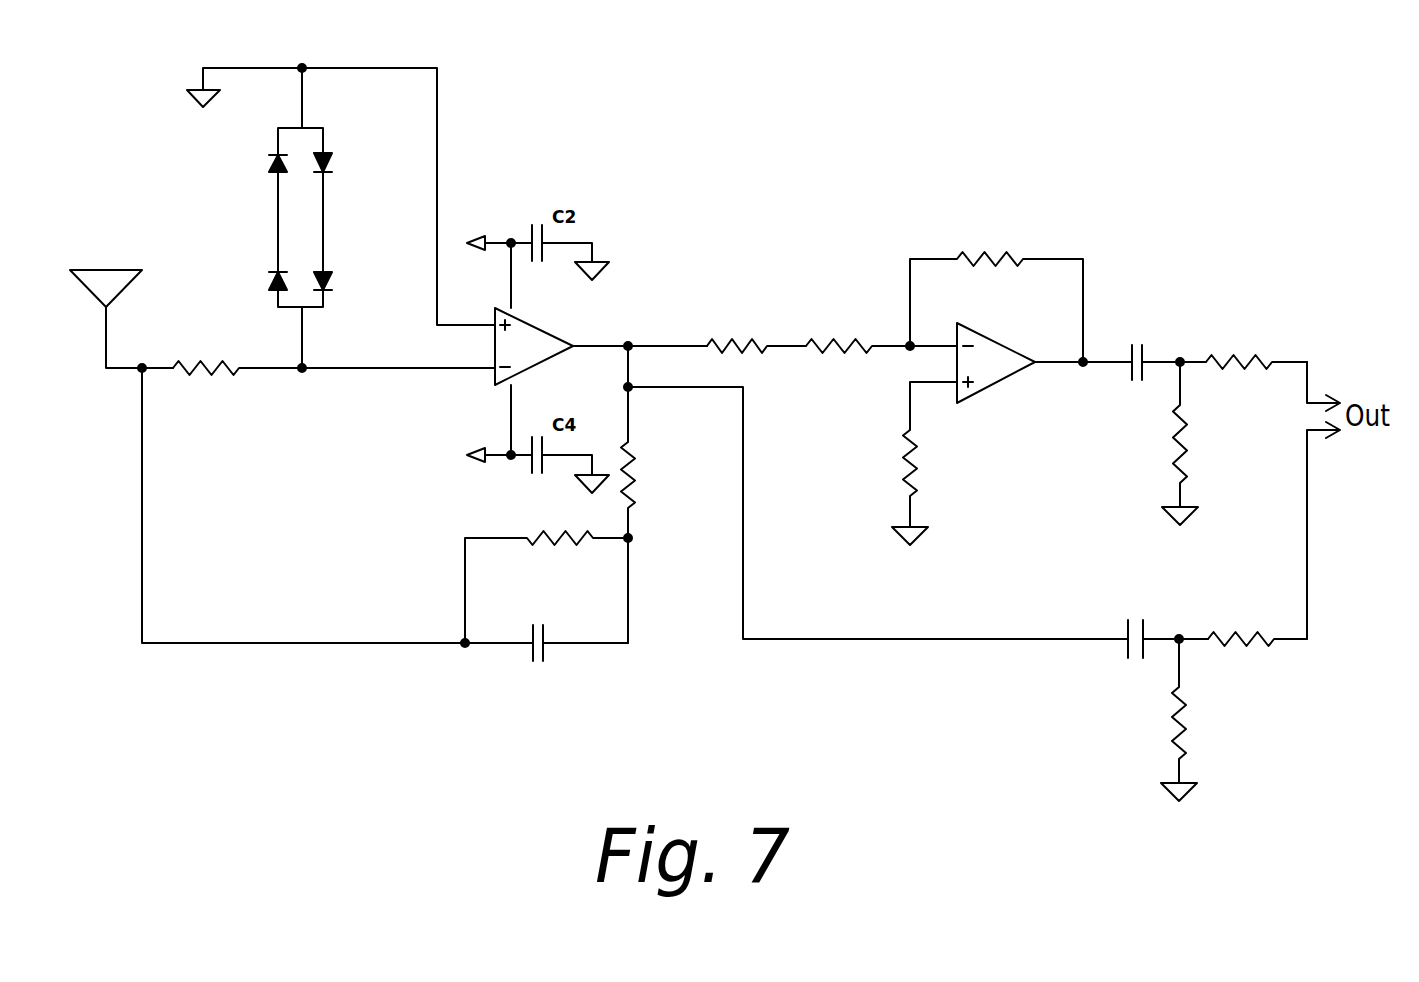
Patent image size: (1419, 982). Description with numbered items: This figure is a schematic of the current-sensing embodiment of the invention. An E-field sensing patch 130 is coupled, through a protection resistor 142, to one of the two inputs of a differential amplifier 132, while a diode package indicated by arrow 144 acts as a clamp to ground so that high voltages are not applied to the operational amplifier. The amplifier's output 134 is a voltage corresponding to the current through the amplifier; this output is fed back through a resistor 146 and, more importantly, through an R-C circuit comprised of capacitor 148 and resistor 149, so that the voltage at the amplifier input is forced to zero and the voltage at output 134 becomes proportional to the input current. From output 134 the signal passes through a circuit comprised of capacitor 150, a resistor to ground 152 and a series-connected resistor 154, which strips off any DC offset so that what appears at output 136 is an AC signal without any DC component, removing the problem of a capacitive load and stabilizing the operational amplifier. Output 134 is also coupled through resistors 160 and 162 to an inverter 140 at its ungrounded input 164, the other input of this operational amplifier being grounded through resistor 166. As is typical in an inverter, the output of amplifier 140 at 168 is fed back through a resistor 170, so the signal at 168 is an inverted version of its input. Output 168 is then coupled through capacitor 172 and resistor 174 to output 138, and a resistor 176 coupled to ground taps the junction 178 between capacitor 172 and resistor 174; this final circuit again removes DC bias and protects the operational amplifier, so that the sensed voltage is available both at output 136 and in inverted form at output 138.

The E-field sensing patch 130 is at (107, 337).
The differential amplifier 132 is at (493, 387).
The output 134 is at (628, 343).
The output 136 is at (1308, 462).
The output 138 is at (1308, 378).
The inverter 140 is at (1005, 343).
The resistor 142 is at (220, 372).
The diode package 144 is at (245, 217).
The resistor 146 is at (493, 366).
The capacitor 148 is at (530, 652).
The resistor 149 is at (527, 538).
The capacitor 150 is at (1124, 624).
The resistor to ground 152 is at (1175, 730).
The series-connected resistor 154 is at (1253, 644).
The resistor 160 is at (740, 338).
The resistor 162 is at (838, 338).
The ungrounded output 164 is at (955, 346).
The resistor 166 is at (906, 470).
The output 168 is at (1080, 368).
The resistor 170 is at (1000, 255).
The capacitor 172 is at (1128, 352).
The resistor 174 is at (1268, 355).
The resistor 176 is at (1183, 438).
The junction 178 is at (1182, 357).